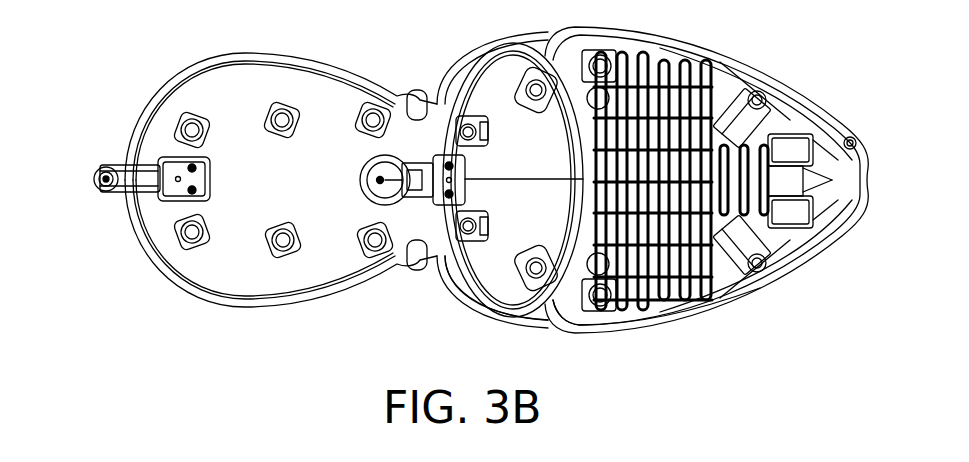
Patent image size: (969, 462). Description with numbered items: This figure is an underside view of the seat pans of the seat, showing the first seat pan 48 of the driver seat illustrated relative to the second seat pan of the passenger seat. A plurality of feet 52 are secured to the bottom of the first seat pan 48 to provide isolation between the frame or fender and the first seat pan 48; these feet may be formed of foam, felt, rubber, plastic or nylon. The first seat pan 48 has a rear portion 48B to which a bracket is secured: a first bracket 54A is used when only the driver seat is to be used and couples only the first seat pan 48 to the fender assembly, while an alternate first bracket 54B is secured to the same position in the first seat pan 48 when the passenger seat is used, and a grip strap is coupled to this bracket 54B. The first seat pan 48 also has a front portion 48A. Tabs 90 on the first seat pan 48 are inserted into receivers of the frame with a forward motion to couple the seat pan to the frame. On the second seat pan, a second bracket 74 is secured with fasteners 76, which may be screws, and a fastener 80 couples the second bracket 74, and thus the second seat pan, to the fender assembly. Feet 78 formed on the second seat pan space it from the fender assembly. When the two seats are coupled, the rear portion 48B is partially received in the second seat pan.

The first seat pan 48 is at (757, 290).
The first housing portion 48A is at (628, 322).
The rear portion of the first seat pan 48B is at (483, 276).
The feet 52 is at (604, 60).
The first bracket 54A is at (443, 77).
The alternate first bracket 54B is at (373, 118).
The second bracket 74 is at (124, 175).
The fasteners 76 is at (172, 158).
The feet 78 is at (190, 125).
The fastener 80 is at (99, 190).
The tabs 90 is at (785, 142).